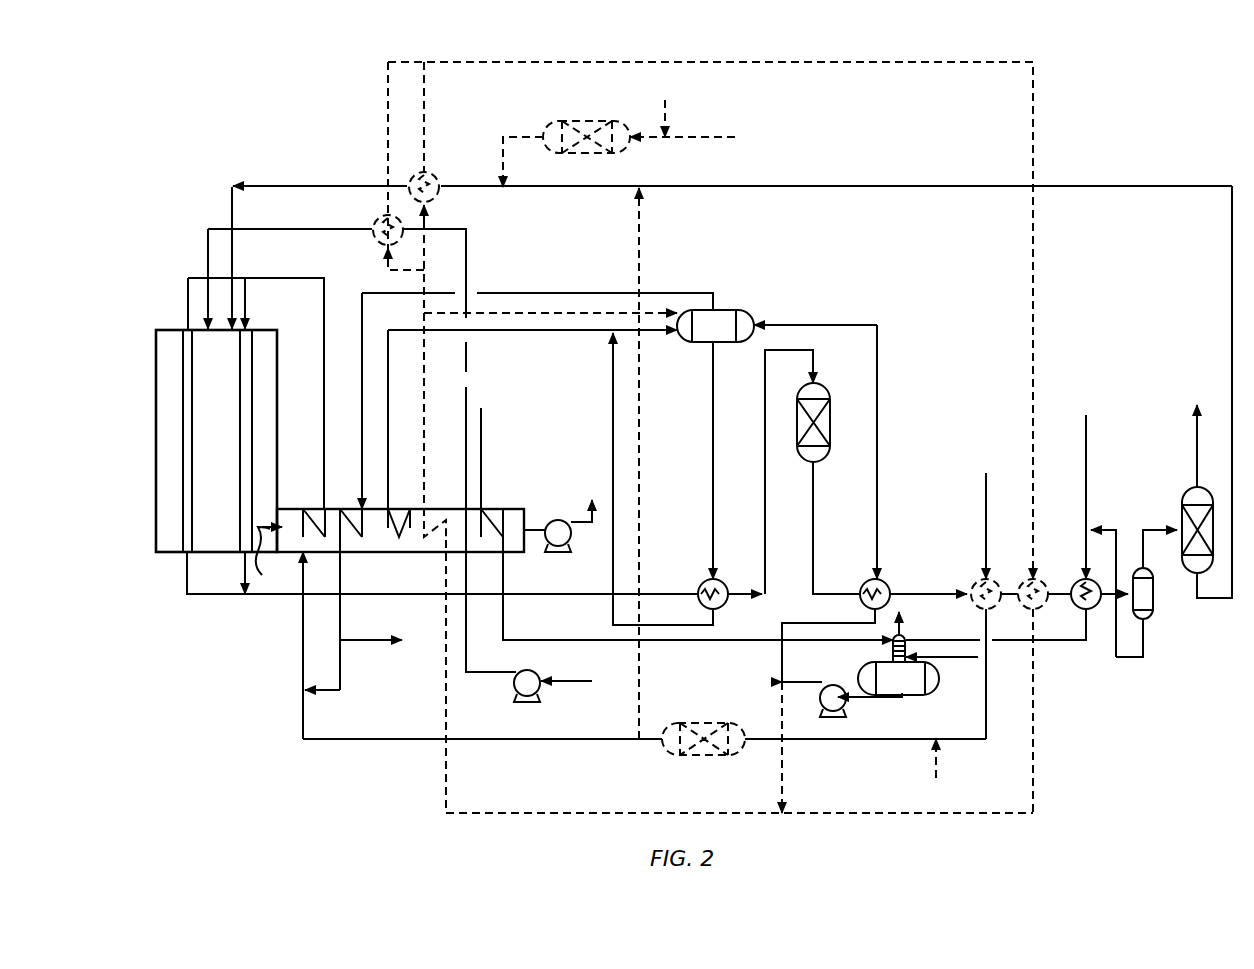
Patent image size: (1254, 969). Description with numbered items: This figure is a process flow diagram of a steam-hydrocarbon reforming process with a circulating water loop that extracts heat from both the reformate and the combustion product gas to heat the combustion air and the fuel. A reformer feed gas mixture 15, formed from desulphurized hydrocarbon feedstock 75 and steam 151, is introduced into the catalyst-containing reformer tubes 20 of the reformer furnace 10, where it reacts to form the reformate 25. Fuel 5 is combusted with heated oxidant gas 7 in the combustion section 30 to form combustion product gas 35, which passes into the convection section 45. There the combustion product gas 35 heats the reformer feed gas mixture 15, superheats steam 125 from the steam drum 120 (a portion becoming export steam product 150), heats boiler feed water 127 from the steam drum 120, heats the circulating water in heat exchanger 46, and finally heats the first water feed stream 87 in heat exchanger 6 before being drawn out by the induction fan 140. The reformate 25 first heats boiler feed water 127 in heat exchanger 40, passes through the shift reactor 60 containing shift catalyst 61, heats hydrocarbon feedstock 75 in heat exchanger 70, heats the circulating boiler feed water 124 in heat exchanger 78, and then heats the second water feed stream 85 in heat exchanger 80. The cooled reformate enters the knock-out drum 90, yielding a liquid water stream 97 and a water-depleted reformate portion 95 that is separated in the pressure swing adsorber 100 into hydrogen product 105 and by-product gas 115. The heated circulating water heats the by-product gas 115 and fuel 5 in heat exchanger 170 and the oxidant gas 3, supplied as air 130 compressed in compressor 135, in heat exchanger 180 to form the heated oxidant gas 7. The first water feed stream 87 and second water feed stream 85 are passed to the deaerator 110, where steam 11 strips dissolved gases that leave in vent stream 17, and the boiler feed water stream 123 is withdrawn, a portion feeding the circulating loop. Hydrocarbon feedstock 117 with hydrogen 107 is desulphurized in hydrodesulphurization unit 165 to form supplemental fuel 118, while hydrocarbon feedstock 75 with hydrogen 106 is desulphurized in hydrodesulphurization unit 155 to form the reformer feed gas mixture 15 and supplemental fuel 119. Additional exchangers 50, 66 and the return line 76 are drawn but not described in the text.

The oxidant gas 3 is at (464, 648).
The fuel 5 is at (231, 299).
The heat exchanger 6 is at (494, 504).
The heated oxidant gas 7 is at (330, 229).
The reformer furnace 10 is at (156, 378).
The steam 11 is at (950, 658).
The reformer feed gas mixture 15 is at (300, 277).
The vent stream 17 is at (902, 625).
The catalyst-containing reformer tubes 20 is at (183, 432).
The reformate 25 is at (259, 597).
The combustion section 30 is at (211, 471).
The combustion product gas 35 is at (274, 561).
The heat exchanger 40 is at (697, 582).
The convection section 45 is at (373, 540).
The heat exchanger 46 is at (432, 516).
The heat exchanger 50 is at (886, 580).
The shift reactor 60 is at (822, 390).
The shift catalyst 61 is at (819, 426).
The effluent line 66 is at (812, 526).
The heat exchanger 70 is at (974, 582).
The hydrocarbon feedstock 75 is at (986, 520).
The return line 76 is at (338, 742).
The heat exchanger 78 is at (1026, 580).
The heat exchanger 80 is at (1074, 582).
The second water feed stream 85 is at (1086, 488).
The first water feed stream 87 is at (480, 428).
The knock-out drum 90 is at (1155, 598).
The water-depleted reformate portion 95 is at (1156, 524).
The liquid water stream 97 is at (1133, 658).
The pressure swing adsorber 100 is at (1184, 494).
The hydrogen product 105 is at (1194, 434).
The hydrogen 106 is at (934, 770).
The hydrogen 107 is at (670, 110).
The deaerator 110 is at (886, 690).
The by-product gas 115 is at (1232, 374).
The hydrocarbon feedstock 117 is at (702, 140).
The supplemental fuel 118 is at (503, 134).
The supplemental fuel 119 is at (640, 269).
The steam drum 120 is at (752, 313).
The boiler feed water stream 123 is at (878, 443).
The boiler feed water 124 is at (448, 785).
The steam 125 is at (564, 292).
The boiler feed water 127 is at (712, 445).
The air 130 is at (568, 682).
The compressor 135 is at (504, 680).
The induction fan 140 is at (558, 520).
The steam product 150 is at (376, 626).
The steam 151 is at (338, 682).
The hydrodesulphurization unit 155 is at (702, 758).
The hydrodesulphurization unit 165 is at (577, 122).
The heat exchanger 170 is at (434, 180).
The heat exchanger 180 is at (376, 224).